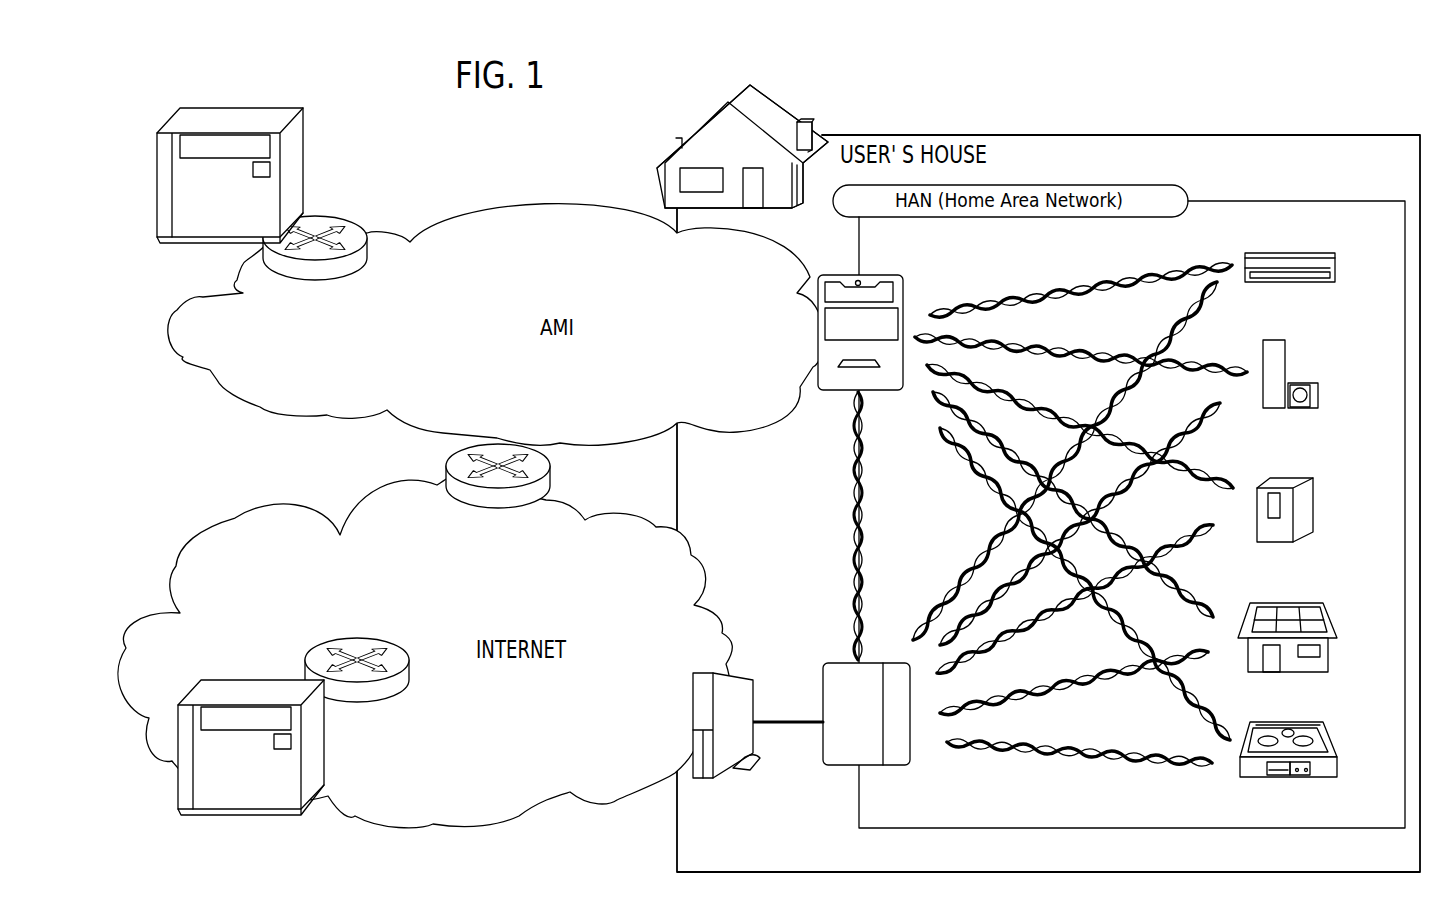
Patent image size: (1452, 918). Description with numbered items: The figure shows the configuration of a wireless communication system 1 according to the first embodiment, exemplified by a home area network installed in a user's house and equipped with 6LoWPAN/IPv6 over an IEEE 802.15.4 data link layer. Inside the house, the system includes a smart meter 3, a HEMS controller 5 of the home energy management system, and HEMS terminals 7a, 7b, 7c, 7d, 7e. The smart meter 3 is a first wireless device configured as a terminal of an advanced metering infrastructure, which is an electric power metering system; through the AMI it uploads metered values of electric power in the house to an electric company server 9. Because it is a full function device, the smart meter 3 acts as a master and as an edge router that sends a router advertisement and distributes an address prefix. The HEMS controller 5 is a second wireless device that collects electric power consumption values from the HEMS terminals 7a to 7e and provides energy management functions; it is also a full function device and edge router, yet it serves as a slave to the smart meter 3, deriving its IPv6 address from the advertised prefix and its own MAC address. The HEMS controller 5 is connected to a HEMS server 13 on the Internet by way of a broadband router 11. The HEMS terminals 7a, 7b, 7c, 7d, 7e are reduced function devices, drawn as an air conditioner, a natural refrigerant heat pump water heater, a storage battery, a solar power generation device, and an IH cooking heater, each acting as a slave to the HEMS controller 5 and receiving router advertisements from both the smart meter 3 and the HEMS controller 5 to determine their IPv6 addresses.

The wireless communication system 1 is at (1114, 119).
The smart meter 3 is at (905, 300).
The HEMS controller 5 is at (870, 765).
The HEMS terminal 7a is at (1278, 251).
The HEMS terminal 7b is at (1287, 360).
The HEMS terminal 7c is at (1315, 503).
The HEMS terminal 7d is at (1332, 615).
The HEMS terminal 7e is at (1333, 742).
The electric company server 9 is at (303, 167).
The broadband router 11 is at (707, 780).
The HEMS server 13 is at (217, 820).